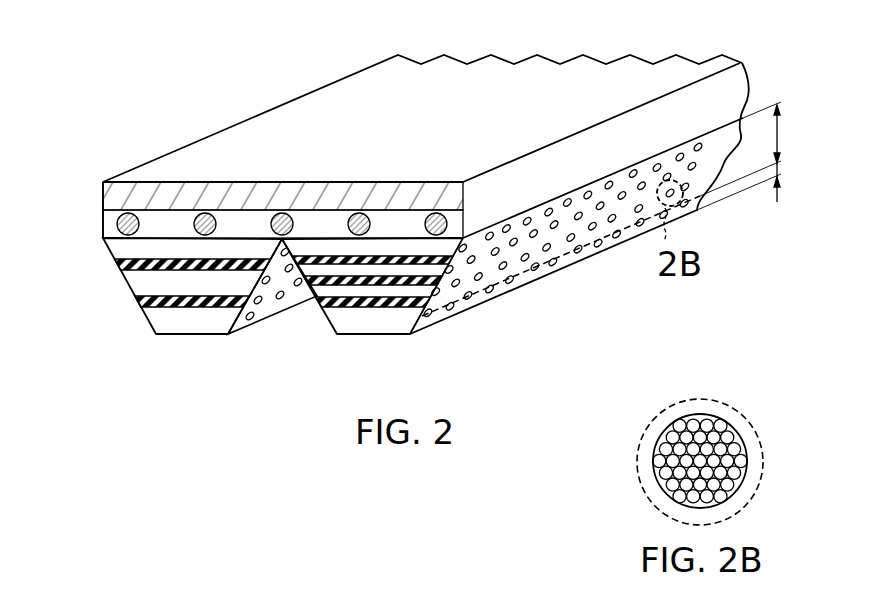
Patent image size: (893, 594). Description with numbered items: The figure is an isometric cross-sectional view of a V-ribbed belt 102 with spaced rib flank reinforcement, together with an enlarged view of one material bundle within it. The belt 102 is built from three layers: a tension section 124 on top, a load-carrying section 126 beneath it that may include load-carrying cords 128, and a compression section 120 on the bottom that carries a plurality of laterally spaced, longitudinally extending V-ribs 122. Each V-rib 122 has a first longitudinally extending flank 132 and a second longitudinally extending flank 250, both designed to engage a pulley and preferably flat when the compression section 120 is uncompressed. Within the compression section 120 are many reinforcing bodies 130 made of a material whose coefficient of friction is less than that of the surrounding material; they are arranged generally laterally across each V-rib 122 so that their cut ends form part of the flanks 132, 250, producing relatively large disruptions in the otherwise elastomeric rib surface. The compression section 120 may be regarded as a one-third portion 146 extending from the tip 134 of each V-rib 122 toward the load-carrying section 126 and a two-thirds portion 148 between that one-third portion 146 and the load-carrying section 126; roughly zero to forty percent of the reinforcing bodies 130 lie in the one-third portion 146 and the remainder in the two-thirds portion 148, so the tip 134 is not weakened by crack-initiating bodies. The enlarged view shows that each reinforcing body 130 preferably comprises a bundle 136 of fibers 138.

In FIG. 2, the V-ribbed belt 102 is at (207, 108).
In FIG. 2, the compression section 120 is at (637, 173).
In FIG. 2, the V-rib 122 is at (333, 330).
In FIG. 2, the tension section 124 is at (103, 197).
In FIG. 2, the load-carrying section 126 is at (103, 228).
In FIG. 2, the load-carrying cord 128 is at (121, 227).
In FIG. 2, the reinforcing body 130 is at (490, 274).
In FIG. 2B, the reinforcing body 130 is at (658, 432).
In FIG. 2, the first longitudinally extending flank 132 is at (610, 247).
In FIG. 2, the tip 134 is at (375, 336).
In FIG. 2B, the bundle 136 is at (738, 437).
In FIG. 2B, the fiber 138 is at (738, 465).
In FIG. 2, the one-third portion 146 is at (780, 169).
In FIG. 2, the two-thirds portion 148 is at (780, 133).
In FIG. 2, the second longitudinally extending flank 250 is at (318, 318).